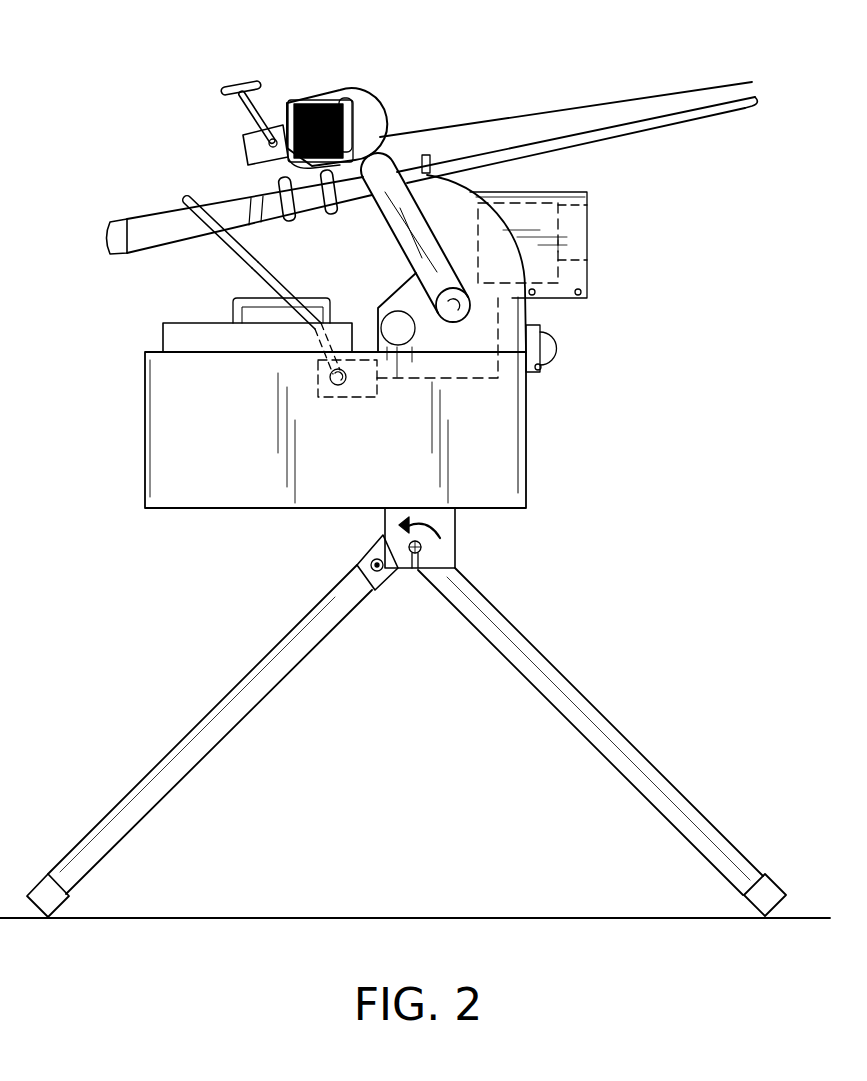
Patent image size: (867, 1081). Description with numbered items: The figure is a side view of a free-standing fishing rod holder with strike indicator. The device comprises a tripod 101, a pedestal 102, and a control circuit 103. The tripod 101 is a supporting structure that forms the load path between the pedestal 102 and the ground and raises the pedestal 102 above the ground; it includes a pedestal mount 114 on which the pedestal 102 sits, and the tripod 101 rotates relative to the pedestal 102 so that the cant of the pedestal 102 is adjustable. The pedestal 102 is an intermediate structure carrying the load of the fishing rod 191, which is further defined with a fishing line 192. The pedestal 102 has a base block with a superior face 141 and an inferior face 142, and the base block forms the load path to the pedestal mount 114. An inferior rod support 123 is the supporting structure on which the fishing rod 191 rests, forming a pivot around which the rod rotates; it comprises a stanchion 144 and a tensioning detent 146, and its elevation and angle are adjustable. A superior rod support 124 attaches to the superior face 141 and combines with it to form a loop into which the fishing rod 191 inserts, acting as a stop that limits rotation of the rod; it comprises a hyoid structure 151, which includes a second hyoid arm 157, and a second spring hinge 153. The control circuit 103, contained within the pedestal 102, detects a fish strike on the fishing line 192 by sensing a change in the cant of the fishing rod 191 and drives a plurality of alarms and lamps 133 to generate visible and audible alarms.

The tripod 101 is at (598, 690).
The pedestal 102 is at (530, 462).
The control circuit 103 is at (585, 273).
The pedestal mount 114 is at (457, 537).
The inferior rod support 123 is at (385, 187).
The superior rod support 124 is at (188, 198).
The plurality of alarms and lamps 133 is at (585, 230).
The superior face 141 is at (197, 323).
The inferior face 142 is at (223, 508).
The stanchion 144 is at (428, 215).
The tensioning detent 146 is at (458, 311).
The hyoid structure 151 is at (217, 240).
The second spring hinge 153 is at (335, 386).
The second hyoid arm 157 is at (258, 273).
The fishing rod 191 is at (732, 110).
The fishing line 192 is at (603, 102).